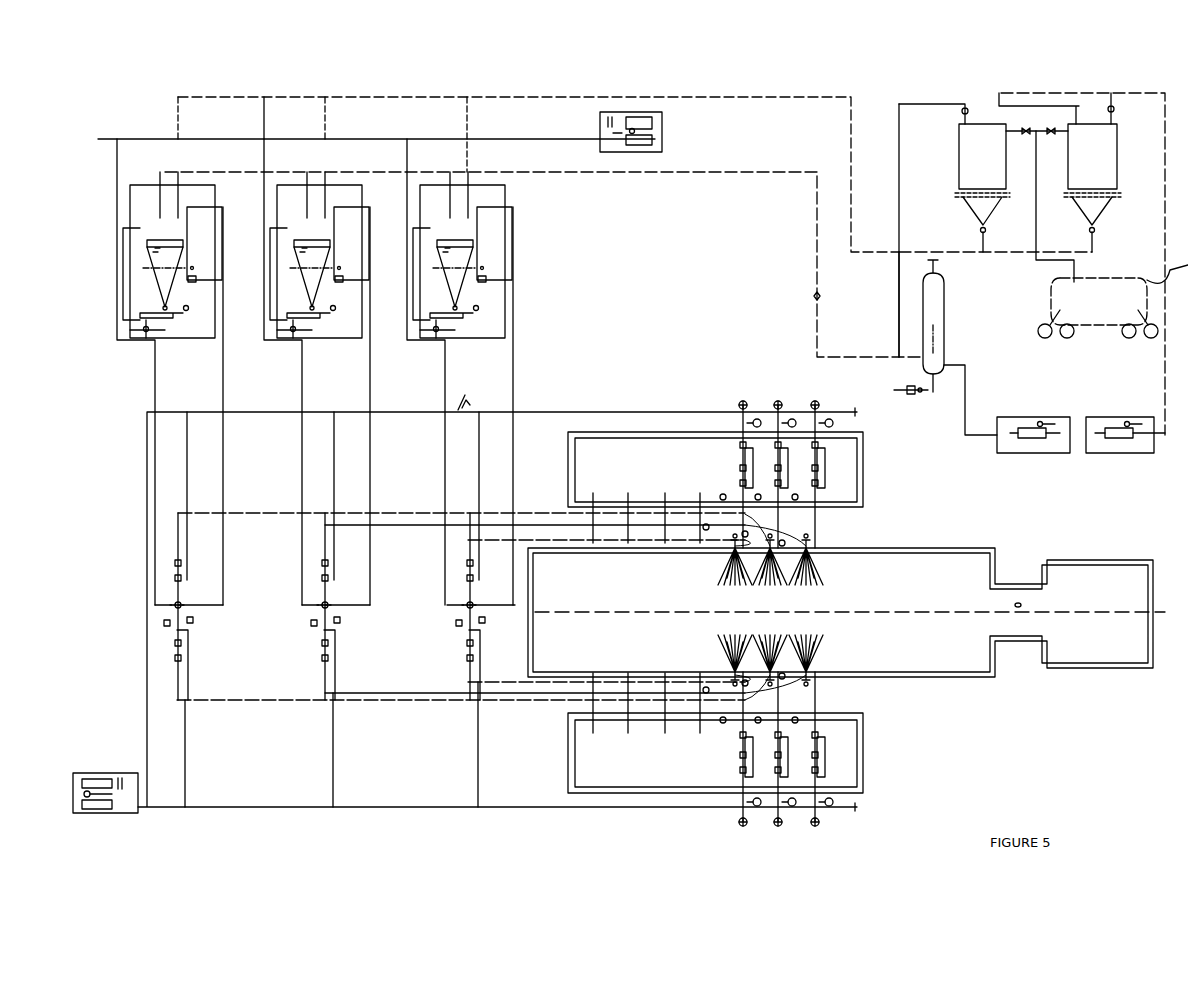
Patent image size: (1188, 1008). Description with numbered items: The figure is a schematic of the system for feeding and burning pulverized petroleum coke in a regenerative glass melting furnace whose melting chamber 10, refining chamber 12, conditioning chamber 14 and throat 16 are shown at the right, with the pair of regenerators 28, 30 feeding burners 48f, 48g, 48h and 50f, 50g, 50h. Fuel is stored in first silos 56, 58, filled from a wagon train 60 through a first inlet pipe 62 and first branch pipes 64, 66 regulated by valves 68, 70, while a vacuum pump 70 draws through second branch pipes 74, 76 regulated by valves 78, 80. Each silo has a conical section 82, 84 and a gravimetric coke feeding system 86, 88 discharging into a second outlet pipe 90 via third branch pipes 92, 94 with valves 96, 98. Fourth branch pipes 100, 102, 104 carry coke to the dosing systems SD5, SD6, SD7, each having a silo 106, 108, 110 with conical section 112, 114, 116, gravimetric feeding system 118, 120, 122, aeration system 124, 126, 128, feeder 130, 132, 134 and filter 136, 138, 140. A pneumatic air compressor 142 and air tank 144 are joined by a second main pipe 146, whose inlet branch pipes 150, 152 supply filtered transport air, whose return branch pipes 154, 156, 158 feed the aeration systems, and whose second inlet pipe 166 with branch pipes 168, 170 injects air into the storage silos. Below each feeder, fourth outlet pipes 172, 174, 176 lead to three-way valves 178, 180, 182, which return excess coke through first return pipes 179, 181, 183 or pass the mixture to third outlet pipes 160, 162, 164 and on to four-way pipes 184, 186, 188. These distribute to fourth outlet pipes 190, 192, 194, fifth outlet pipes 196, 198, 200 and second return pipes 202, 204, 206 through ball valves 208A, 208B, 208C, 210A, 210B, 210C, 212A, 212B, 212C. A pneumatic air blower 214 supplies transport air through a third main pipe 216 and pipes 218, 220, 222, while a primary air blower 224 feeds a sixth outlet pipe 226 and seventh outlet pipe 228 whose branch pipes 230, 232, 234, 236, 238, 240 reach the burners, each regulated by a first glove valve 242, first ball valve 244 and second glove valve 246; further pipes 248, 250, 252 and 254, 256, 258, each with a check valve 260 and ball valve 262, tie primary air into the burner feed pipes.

The melting chamber 10 is at (550, 680).
The refining chamber 12 is at (950, 655).
The conditioning chamber 14 is at (1100, 650).
The throat 16 is at (1017, 625).
The regenerator 28 is at (618, 440).
The regenerator 30 is at (618, 760).
The burner 48f is at (722, 562).
The burner 48g is at (770, 575).
The burner 48h is at (818, 565).
The burner 50f is at (722, 655).
The burner 50g is at (768, 640).
The burner 50h is at (818, 655).
The first storage silo 56 is at (968, 120).
The first storage silo 58 is at (1092, 122).
The wagon train 60 is at (1083, 293).
The first inlet pipe 62 is at (1075, 265).
The first branch pipe 64 is at (1012, 135).
The first branch pipe 66 is at (1050, 135).
The valve 68 is at (1026, 131).
The valve / vacuum pump 70 is at (1093, 453).
The second branch pipe 74 is at (999, 100).
The second branch pipe 76 is at (1112, 110).
The valve 78 is at (1005, 108).
The valve 80 is at (1165, 110).
The conical section 82 is at (985, 210).
The conical section 84 is at (1098, 208).
The gravimetric coke feeding system 86 is at (1005, 198).
The gravimetric coke feeding system 88 is at (1115, 195).
The second outlet pipe 90 is at (985, 255).
The third branch pipe 92 is at (983, 240).
The third branch pipe 94 is at (1093, 250).
The valve 96 is at (985, 232).
The valve 98 is at (1095, 230).
The fourth branch pipe 100 is at (182, 118).
The fourth branch pipe 102 is at (328, 118).
The fourth branch pipe 104 is at (470, 118).
The second series silo 106 is at (130, 230).
The second series silo 108 is at (290, 220).
The second series silo 110 is at (455, 232).
The conical section 112 is at (155, 260).
The conical section 114 is at (300, 260).
The conical section 116 is at (450, 262).
The gravimetric coke feeding system 118 is at (135, 248).
The gravimetric coke feeding system 120 is at (283, 248).
The gravimetric coke feeding system 122 is at (428, 250).
The aeration system 124 is at (195, 290).
The aeration system 126 is at (325, 315).
The aeration system 128 is at (490, 283).
The feeder 130 is at (180, 330).
The feeder 132 is at (330, 325).
The feeder 134 is at (495, 315).
The filter 136 is at (150, 205).
The filter 138 is at (305, 190).
The filter 140 is at (445, 190).
The pneumatic air compressor 142 is at (1010, 455).
The air tank 144 is at (935, 350).
The second main pipe 146 is at (817, 272).
The first inlet branch pipe 150 is at (322, 182).
The first inlet branch pipe 152 is at (460, 178).
The first return branch pipe 154 is at (228, 172).
The first return branch pipe 156 is at (370, 182).
The first return branch pipe 158 is at (510, 180).
The third outlet pipe 160 is at (155, 390).
The third outlet pipe 162 is at (300, 410).
The third outlet pipe 164 is at (447, 405).
The second inlet pipe 166 is at (899, 205).
The second inlet branch pipe 168 is at (962, 110).
The second inlet branch pipe 170 is at (1078, 95).
The fourth outlet pipe 172 is at (143, 322).
The fourth outlet pipe 174 is at (368, 385).
The fourth outlet pipe 176 is at (440, 328).
The three-way regulatory valve 178 is at (145, 335).
The first return pipe 179 is at (125, 305).
The three-way regulatory valve 180 is at (290, 335).
The first return pipe 181 is at (275, 300).
The three-way regulatory valve 182 is at (440, 338).
The first return pipe 183 is at (420, 298).
The four-way pipe 184 is at (165, 178).
The four-way pipe 186 is at (320, 615).
The four-way pipe 188 is at (468, 612).
The fourth outlet pipe 190 is at (252, 513).
The fourth outlet pipe 192 is at (400, 525).
The fourth outlet pipe 194 is at (525, 540).
The fifth outlet pipe 196 is at (262, 700).
The fifth outlet pipe 198 is at (405, 695).
The fifth outlet pipe 200 is at (500, 683).
The second return pipe 202 is at (223, 570).
The second return pipe 204 is at (368, 575).
The second return pipe 206 is at (530, 572).
The ball valve 208A is at (175, 600).
The ball valve 208B is at (185, 610).
The ball valve 208C is at (172, 625).
The ball valve 210A is at (322, 603).
The ball valve 210B is at (333, 615).
The ball valve 210C is at (322, 625).
The ball valve 212A is at (468, 600).
The ball valve 212B is at (475, 625).
The ball valve 212C is at (468, 630).
The pneumatic air blower 214 is at (662, 135).
The third main pipe 216 is at (545, 138).
The fourth outlet pipe 218 is at (100, 160).
The fourth outlet pipe 220 is at (262, 132).
The fourth outlet pipe 222 is at (407, 145).
The primary air blower 224 is at (125, 813).
The sixth outlet pipe 226 is at (270, 808).
The seventh outlet pipe 228 is at (147, 488).
The fifth branch pipe 230 is at (742, 800).
The fifth branch pipe 232 is at (773, 810).
The fifth branch pipe 234 is at (810, 810).
The sixth branch pipe 236 is at (738, 415).
The sixth branch pipe 238 is at (775, 418).
The sixth branch pipe 240 is at (800, 418).
The first glove valve 242 is at (740, 458).
The first ball valve 244 is at (742, 478).
The second glove valve 246 is at (745, 470).
The seventh outlet pipe 248 is at (185, 758).
The seventh outlet pipe 250 is at (333, 775).
The seventh outlet pipe 252 is at (478, 782).
The sixth outlet pipe 254 is at (187, 465).
The sixth outlet pipe 256 is at (335, 470).
The sixth outlet pipe 258 is at (478, 480).
The check valve 260 is at (185, 540).
The ball valve 262 is at (181, 563).
The solid fuel dosing system SD5 is at (198, 372).
The solid fuel dosing system SD6 is at (343, 372).
The solid fuel dosing system SD7 is at (495, 392).